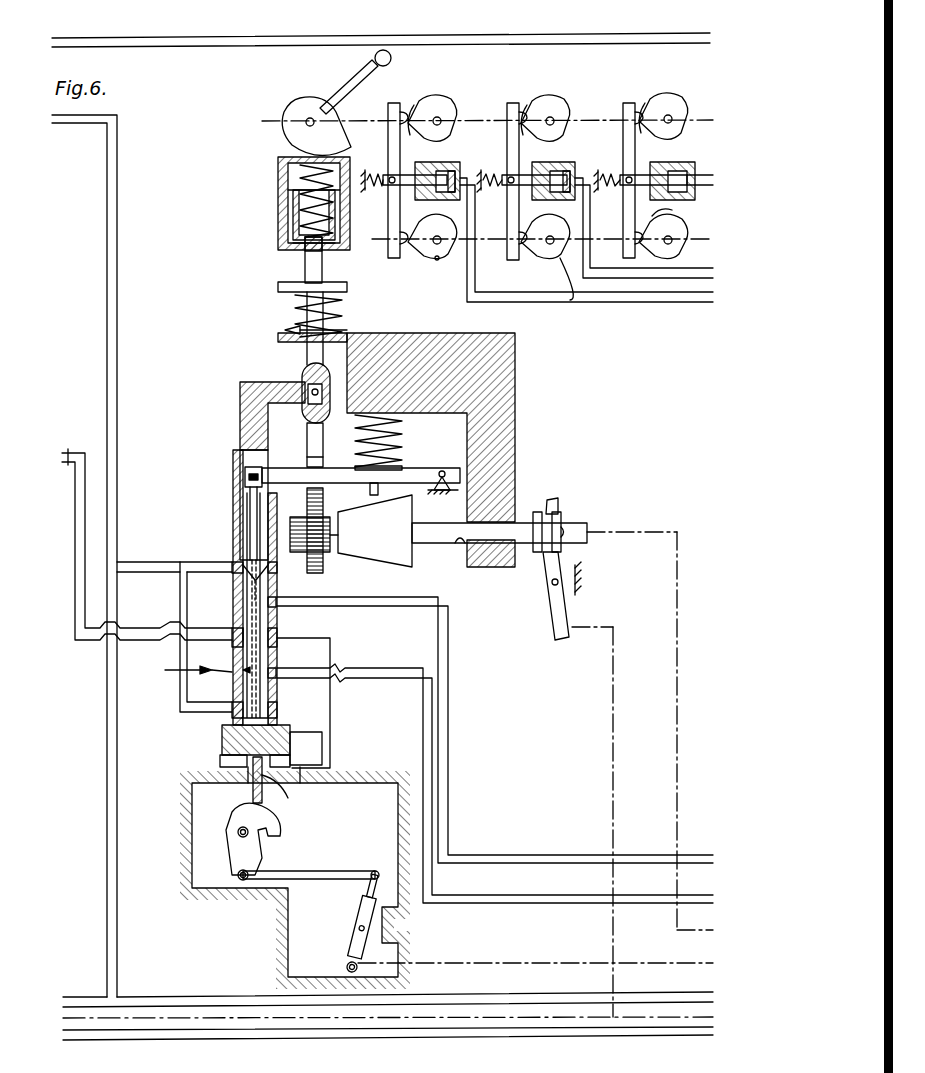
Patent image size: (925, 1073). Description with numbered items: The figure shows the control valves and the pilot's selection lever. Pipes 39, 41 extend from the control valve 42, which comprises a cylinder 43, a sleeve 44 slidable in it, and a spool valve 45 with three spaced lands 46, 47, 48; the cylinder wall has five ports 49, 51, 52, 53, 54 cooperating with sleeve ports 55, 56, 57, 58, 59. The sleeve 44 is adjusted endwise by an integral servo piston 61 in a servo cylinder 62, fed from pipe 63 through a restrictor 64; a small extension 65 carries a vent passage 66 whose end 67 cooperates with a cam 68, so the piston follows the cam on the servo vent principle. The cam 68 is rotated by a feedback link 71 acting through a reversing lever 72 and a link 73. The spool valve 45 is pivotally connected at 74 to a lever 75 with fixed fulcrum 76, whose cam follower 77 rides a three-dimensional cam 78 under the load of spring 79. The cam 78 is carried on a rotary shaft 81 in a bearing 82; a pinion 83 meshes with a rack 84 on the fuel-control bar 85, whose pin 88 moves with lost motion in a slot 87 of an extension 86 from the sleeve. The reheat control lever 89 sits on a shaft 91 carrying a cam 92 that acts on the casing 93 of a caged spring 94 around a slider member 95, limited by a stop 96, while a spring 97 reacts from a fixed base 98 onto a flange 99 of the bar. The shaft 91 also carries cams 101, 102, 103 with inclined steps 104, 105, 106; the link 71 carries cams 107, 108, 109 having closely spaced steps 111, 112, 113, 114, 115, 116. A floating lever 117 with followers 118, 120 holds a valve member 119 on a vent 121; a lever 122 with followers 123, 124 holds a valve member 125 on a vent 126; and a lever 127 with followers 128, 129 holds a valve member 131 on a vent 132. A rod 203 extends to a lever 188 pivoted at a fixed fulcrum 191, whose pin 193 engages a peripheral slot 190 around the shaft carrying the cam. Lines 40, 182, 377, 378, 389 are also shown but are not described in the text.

The pipe 39 is at (658, 855).
The supply pipe 40 is at (77, 124).
The pipe 41 is at (657, 897).
The control valve 42 is at (165, 670).
The cylinder 43 is at (232, 626).
The sleeve 44 is at (232, 541).
The spool valve 45 is at (243, 671).
The land 46 is at (238, 708).
The land 47 is at (236, 636).
The land 48 is at (236, 590).
The port 49 is at (236, 710).
The port 51 is at (278, 676).
The port 52 is at (290, 638).
The port 53 is at (290, 600).
The port 54 is at (274, 568).
The sleeve port 55 is at (290, 732).
The sleeve port 56 is at (278, 698).
The sleeve port 57 is at (278, 640).
The sleeve port 58 is at (278, 604).
The sleeve port 59 is at (236, 568).
The servo piston 61 is at (222, 750).
The servo cylinder 62 is at (290, 798).
The pipe 63 is at (68, 452).
The restrictor 64 is at (305, 790).
The extension 65 is at (265, 785).
The vent passage 66 is at (253, 800).
The end 67 is at (232, 815).
The cam 68 is at (272, 830).
The feedback link 71 is at (500, 963).
The reversing lever 72 is at (352, 928).
The link 73 is at (345, 871).
The pivotal connection 74 is at (245, 476).
The lever 75 is at (412, 475).
The fixed fulcrum 76 is at (441, 470).
The cam follower 77 is at (370, 490).
The three-dimensional cam 78 is at (382, 540).
The spring 79 is at (360, 450).
The rotary shaft 81 is at (430, 545).
The bearing 82 is at (458, 545).
The pinion 83 is at (298, 520).
The rack 84 is at (310, 495).
The bar 85 is at (298, 309).
The extension 86 is at (268, 393).
The slot 87 is at (305, 412).
The pin 88 is at (306, 385).
The reheat control lever 89 is at (348, 86).
The shaft 91 is at (300, 110).
The cam 92 is at (285, 121).
The casing 93 is at (280, 170).
The caged spring 94 is at (300, 201).
The slider member 95 is at (297, 228).
The stop 96 is at (290, 247).
The spring 97 is at (285, 330).
The fixed base 98 is at (390, 336).
The flange 99 is at (278, 287).
The cam 101 is at (678, 98).
The cam 102 is at (555, 100).
The cam 103 is at (440, 100).
The inclined step 104 is at (646, 104).
The inclined step 105 is at (528, 108).
The inclined step 106 is at (414, 108).
The cam 107 is at (682, 248).
The cam 108 is at (570, 300).
The cam 109 is at (438, 262).
The inclined step 111 is at (672, 228).
The inclined step 112 is at (675, 212).
The step 113 is at (553, 262).
The step 114 is at (533, 255).
The inclined step 115 is at (433, 262).
The inclined step 116 is at (418, 262).
The floating lever 117 is at (628, 260).
The follower 118 is at (636, 118).
The valve member 119 is at (688, 140).
The follower 120 is at (637, 238).
The vent 121 is at (678, 172).
The lever 122 is at (513, 260).
The follower 123 is at (522, 118).
The follower 124 is at (522, 238).
The valve member 125 is at (545, 180).
The vent 126 is at (576, 178).
The lever 127 is at (388, 258).
The follower 128 is at (403, 118).
The follower 129 is at (403, 238).
The valve member 131 is at (430, 180).
The vent 132 is at (458, 176).
The frame line 182 is at (183, 40).
The lever 188 is at (566, 612).
The peripheral slot 190 is at (566, 530).
The fixed fulcrum 191 is at (552, 584).
The pin 193 is at (552, 512).
The rod 203 is at (220, 1017).
The pipe 377 is at (668, 293).
The pipe 378 is at (500, 293).
The control line 389 is at (676, 760).